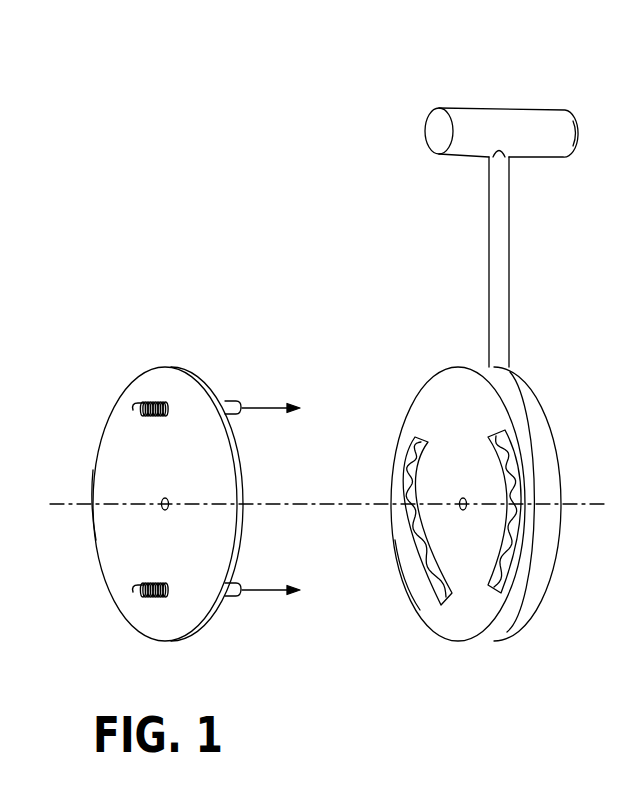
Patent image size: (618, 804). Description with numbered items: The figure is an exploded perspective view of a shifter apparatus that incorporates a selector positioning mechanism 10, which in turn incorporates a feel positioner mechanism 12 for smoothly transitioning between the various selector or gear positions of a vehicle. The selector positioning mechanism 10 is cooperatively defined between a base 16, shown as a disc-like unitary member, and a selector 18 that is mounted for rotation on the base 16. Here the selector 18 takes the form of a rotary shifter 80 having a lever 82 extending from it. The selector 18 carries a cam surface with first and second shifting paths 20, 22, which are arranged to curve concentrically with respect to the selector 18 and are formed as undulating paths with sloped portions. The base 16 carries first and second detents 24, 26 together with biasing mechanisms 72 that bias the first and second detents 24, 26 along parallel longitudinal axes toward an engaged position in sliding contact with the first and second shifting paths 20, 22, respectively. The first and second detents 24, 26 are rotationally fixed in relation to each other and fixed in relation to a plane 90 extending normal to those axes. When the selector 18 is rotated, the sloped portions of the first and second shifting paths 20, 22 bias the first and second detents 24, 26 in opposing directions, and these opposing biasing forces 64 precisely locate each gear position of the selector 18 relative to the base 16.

The selector positioning mechanism 10 is at (600, 77).
The feel positioner mechanism 12 is at (387, 567).
The base 16 is at (173, 358).
The selector 18 is at (435, 358).
The first shifting path 20 is at (503, 457).
The second shifting path 22 is at (417, 458).
The first detent 24 is at (232, 403).
The second detent 26 is at (230, 597).
The opposing biasing forces 64 is at (258, 592).
The biasing mechanisms 72 is at (147, 595).
The rotary shifter 80 is at (527, 322).
The lever 82 is at (500, 206).
The plane 90 is at (108, 408).